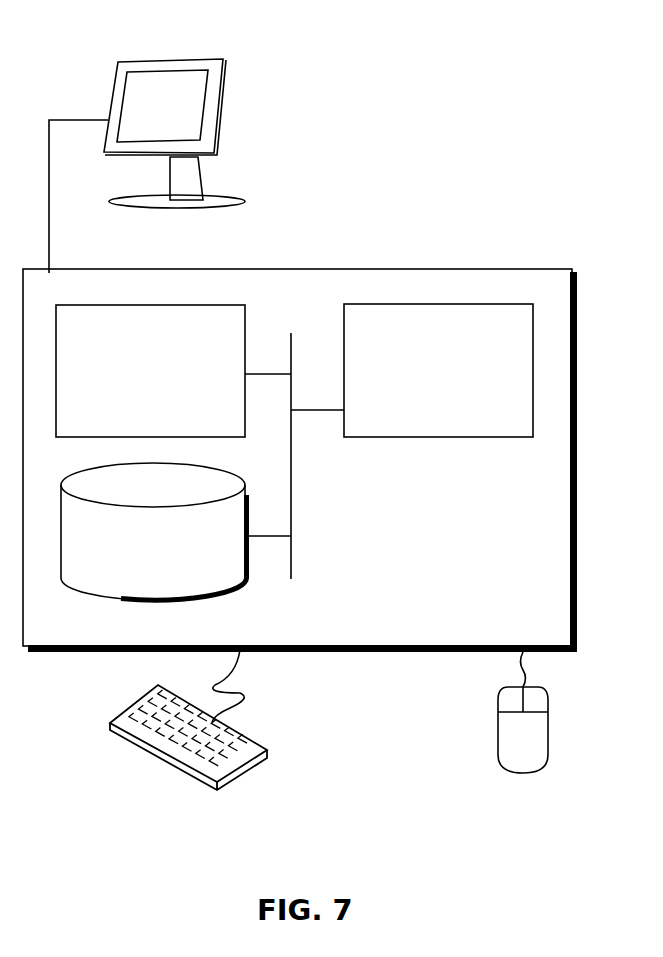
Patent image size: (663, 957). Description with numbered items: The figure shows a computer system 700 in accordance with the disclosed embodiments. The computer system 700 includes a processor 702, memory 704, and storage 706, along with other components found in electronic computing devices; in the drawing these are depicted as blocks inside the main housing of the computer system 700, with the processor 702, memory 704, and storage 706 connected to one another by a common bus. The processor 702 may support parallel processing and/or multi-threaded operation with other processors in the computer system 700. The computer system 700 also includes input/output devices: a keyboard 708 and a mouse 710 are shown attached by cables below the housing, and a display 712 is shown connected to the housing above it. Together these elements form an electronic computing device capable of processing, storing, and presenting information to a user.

The computer system 700 is at (336, 250).
The processor 702 is at (438, 370).
The memory 704 is at (150, 371).
The storage 706 is at (154, 531).
The keyboard 708 is at (127, 740).
The mouse 710 is at (523, 712).
The display 712 is at (147, 166).